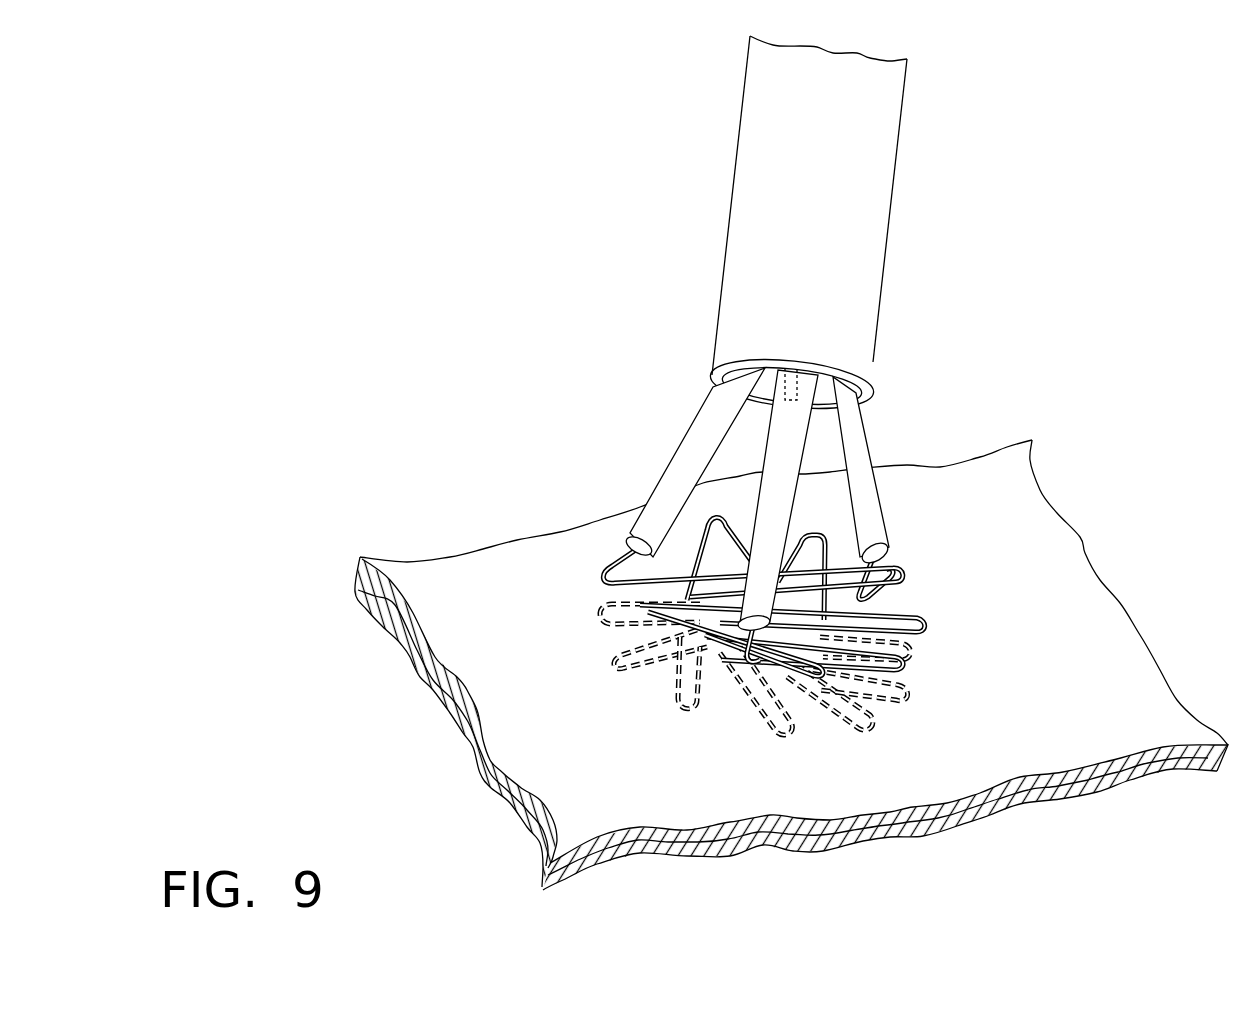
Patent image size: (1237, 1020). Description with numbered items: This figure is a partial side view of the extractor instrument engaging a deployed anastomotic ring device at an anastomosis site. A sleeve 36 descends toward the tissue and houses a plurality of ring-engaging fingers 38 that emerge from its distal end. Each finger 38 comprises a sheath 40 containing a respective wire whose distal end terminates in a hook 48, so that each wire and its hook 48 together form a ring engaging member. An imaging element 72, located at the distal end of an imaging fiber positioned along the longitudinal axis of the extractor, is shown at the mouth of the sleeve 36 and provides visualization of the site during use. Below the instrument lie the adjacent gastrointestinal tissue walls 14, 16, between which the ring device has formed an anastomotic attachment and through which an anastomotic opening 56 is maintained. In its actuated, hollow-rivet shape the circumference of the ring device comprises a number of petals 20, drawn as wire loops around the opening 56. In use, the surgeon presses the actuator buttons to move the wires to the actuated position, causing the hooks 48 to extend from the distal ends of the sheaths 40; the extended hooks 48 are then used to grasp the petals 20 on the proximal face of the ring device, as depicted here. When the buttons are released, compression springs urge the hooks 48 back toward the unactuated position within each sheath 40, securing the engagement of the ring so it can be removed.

The sleeve 36 is at (890, 133).
The ring-engaging finger 38 is at (870, 435).
The sheath 40 is at (697, 455).
The imaging element 72 is at (763, 427).
The tissue wall 14 is at (1002, 516).
The tissue wall 16 is at (1112, 787).
The hook 48 is at (608, 572).
The petal 20 is at (885, 603).
The anastomotic opening 56 is at (722, 628).